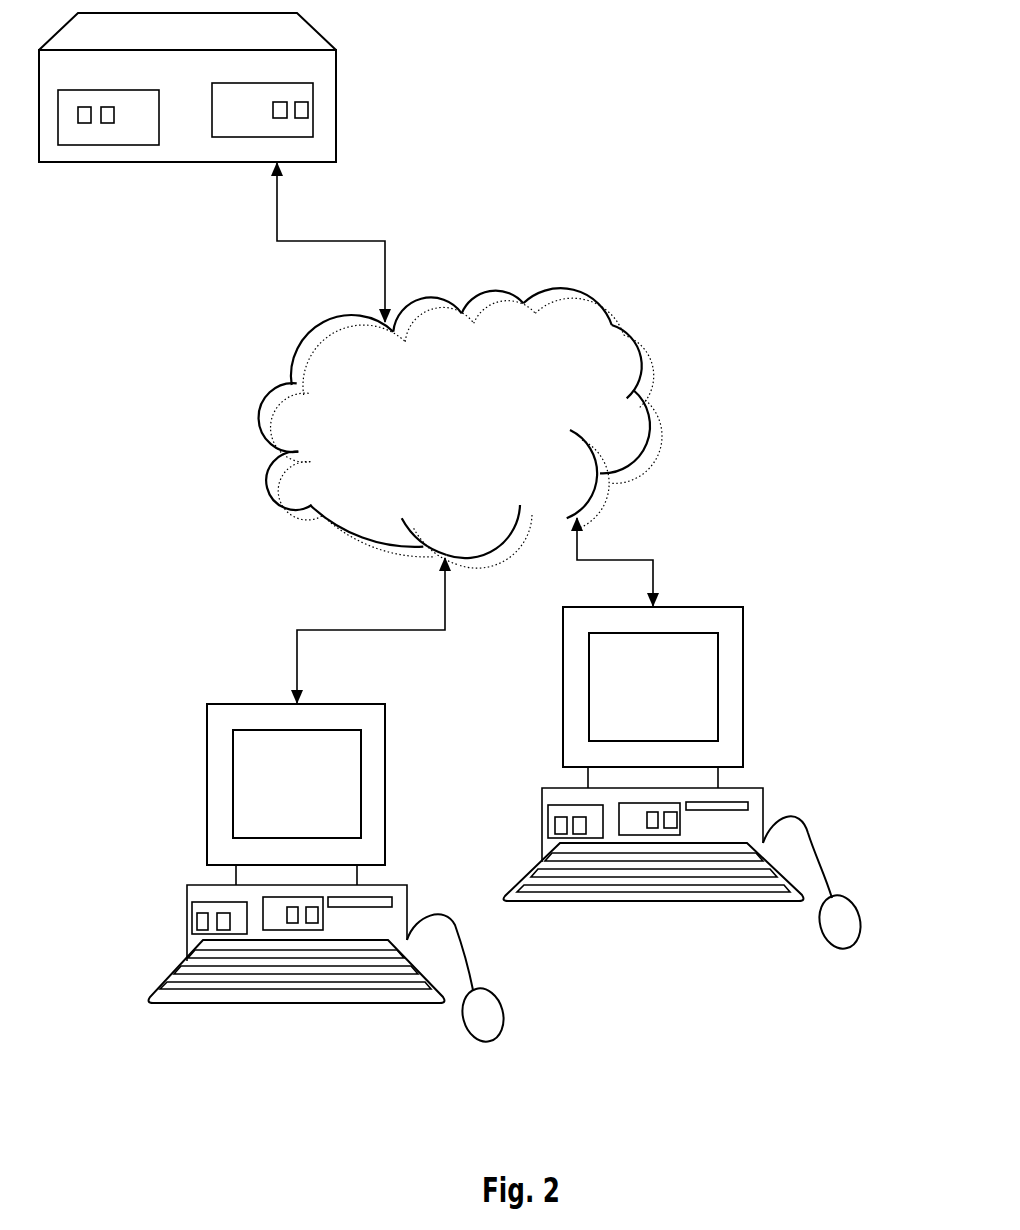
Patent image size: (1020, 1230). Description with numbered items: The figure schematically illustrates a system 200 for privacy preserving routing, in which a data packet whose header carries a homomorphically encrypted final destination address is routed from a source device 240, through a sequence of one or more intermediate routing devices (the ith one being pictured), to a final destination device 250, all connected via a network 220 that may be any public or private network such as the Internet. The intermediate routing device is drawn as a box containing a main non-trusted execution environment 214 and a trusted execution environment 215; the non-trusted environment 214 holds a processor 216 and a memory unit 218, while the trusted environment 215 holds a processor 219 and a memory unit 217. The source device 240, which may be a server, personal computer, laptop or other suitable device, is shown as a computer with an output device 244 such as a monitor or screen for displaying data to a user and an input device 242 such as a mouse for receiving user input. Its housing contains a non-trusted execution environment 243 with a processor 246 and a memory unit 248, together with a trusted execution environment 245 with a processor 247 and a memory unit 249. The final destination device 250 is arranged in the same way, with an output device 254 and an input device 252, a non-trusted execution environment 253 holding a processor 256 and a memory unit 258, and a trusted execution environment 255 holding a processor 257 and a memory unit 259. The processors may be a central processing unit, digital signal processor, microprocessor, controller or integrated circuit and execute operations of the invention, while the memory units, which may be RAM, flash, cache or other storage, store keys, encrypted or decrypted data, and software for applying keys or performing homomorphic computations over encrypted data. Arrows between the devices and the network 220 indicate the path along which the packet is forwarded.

The system for privacy preserving routing 200 is at (740, 170).
The non-trusted execution environment 214 is at (132, 120).
The processor 216 is at (84, 123).
The memory unit 218 is at (107, 106).
The trusted execution environment 215 is at (293, 141).
The processor 219 is at (277, 118).
The memory unit 217 is at (300, 118).
The network 220 is at (640, 373).
The source device 240 is at (257, 700).
The output device 244 is at (334, 778).
The non-trusted execution environment 243 is at (238, 922).
The processor 246 is at (200, 918).
The memory unit 248 is at (223, 918).
The trusted execution environment 245 is at (275, 921).
The processor 247 is at (290, 908).
The memory unit 249 is at (325, 903).
The input device 242 is at (495, 993).
The final destination device 250 is at (735, 606).
The output device 254 is at (690, 684).
The non-trusted execution environment 253 is at (598, 826).
The processor 256 is at (555, 822).
The memory unit 258 is at (567, 817).
The trusted execution environment 255 is at (636, 826).
The processor 257 is at (645, 817).
The memory unit 259 is at (680, 817).
The input device 252 is at (850, 895).